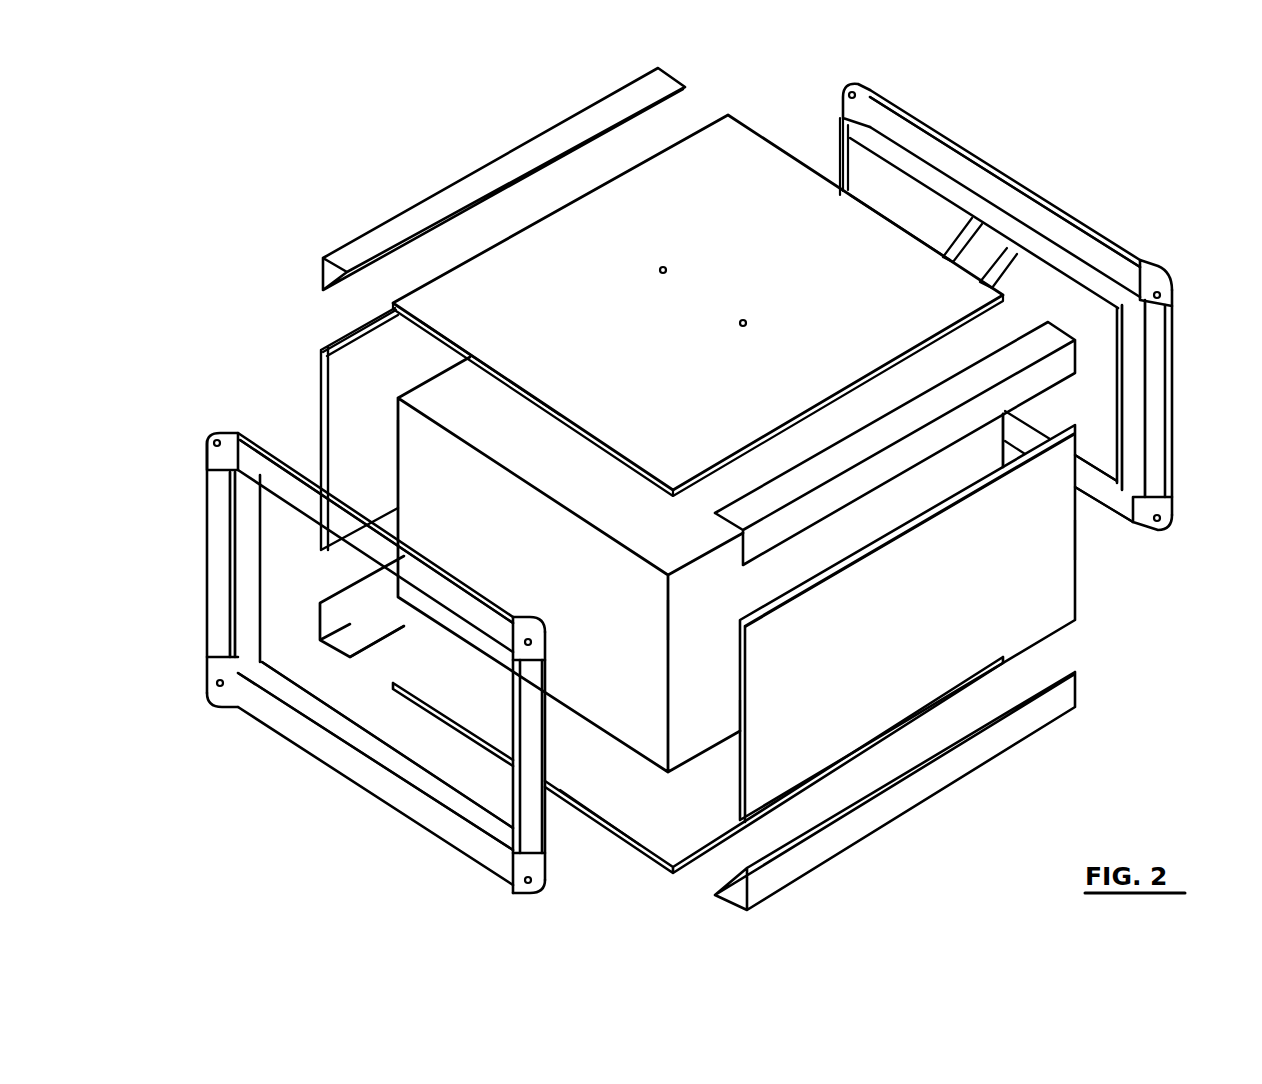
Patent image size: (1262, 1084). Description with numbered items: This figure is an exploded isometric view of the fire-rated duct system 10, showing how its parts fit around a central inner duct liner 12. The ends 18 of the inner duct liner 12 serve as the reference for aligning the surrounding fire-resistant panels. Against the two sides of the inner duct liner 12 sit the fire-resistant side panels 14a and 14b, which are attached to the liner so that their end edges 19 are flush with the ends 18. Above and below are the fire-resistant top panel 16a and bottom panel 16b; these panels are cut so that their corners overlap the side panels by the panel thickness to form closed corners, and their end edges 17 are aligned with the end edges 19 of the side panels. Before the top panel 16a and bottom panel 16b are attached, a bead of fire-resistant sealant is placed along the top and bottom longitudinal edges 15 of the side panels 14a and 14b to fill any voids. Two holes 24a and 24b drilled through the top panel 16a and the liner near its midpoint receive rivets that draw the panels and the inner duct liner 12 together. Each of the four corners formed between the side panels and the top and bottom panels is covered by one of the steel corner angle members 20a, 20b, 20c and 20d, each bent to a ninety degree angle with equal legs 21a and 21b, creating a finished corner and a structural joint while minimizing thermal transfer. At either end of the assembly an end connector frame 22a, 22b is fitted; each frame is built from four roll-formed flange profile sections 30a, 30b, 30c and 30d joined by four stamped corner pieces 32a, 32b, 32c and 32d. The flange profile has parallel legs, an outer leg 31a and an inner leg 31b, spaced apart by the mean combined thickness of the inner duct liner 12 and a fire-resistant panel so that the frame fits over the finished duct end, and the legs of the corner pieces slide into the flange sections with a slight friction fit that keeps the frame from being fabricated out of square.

The fire-rated duct system 10 is at (1092, 110).
The inner duct liner 12 is at (592, 525).
The fire-resistant side panel 14a is at (1078, 594).
The fire-resistant side panel 14b is at (340, 372).
The longitudinal edges 15 is at (353, 330).
The top fire-resistant panel 16a is at (730, 132).
The bottom fire-resistant panel 16b is at (675, 848).
The end edges 17 is at (567, 418).
The ends 18 is at (398, 477).
The end edges 19 is at (328, 452).
The corner angle member 20a is at (1033, 394).
The corner angle member 20b is at (940, 784).
The corner angle member 20c is at (295, 640).
The corner angle member 20d is at (430, 196).
The leg 21a is at (377, 628).
The leg 21b is at (323, 611).
The end connector frame 22a is at (713, 496).
The end connector frame 22b is at (1011, 306).
The hole 24a is at (746, 321).
The hole 24b is at (666, 268).
The flange profile section 30a is at (480, 588).
The flange profile section 30b is at (1130, 342).
The flange profile section 30c is at (418, 777).
The flange profile section 30d is at (250, 548).
The outer leg 31a is at (942, 258).
The inner leg 31b is at (980, 284).
The corner piece 32a is at (548, 630).
The corner piece 32b is at (533, 895).
The corner piece 32c is at (220, 706).
The corner piece 32d is at (215, 432).